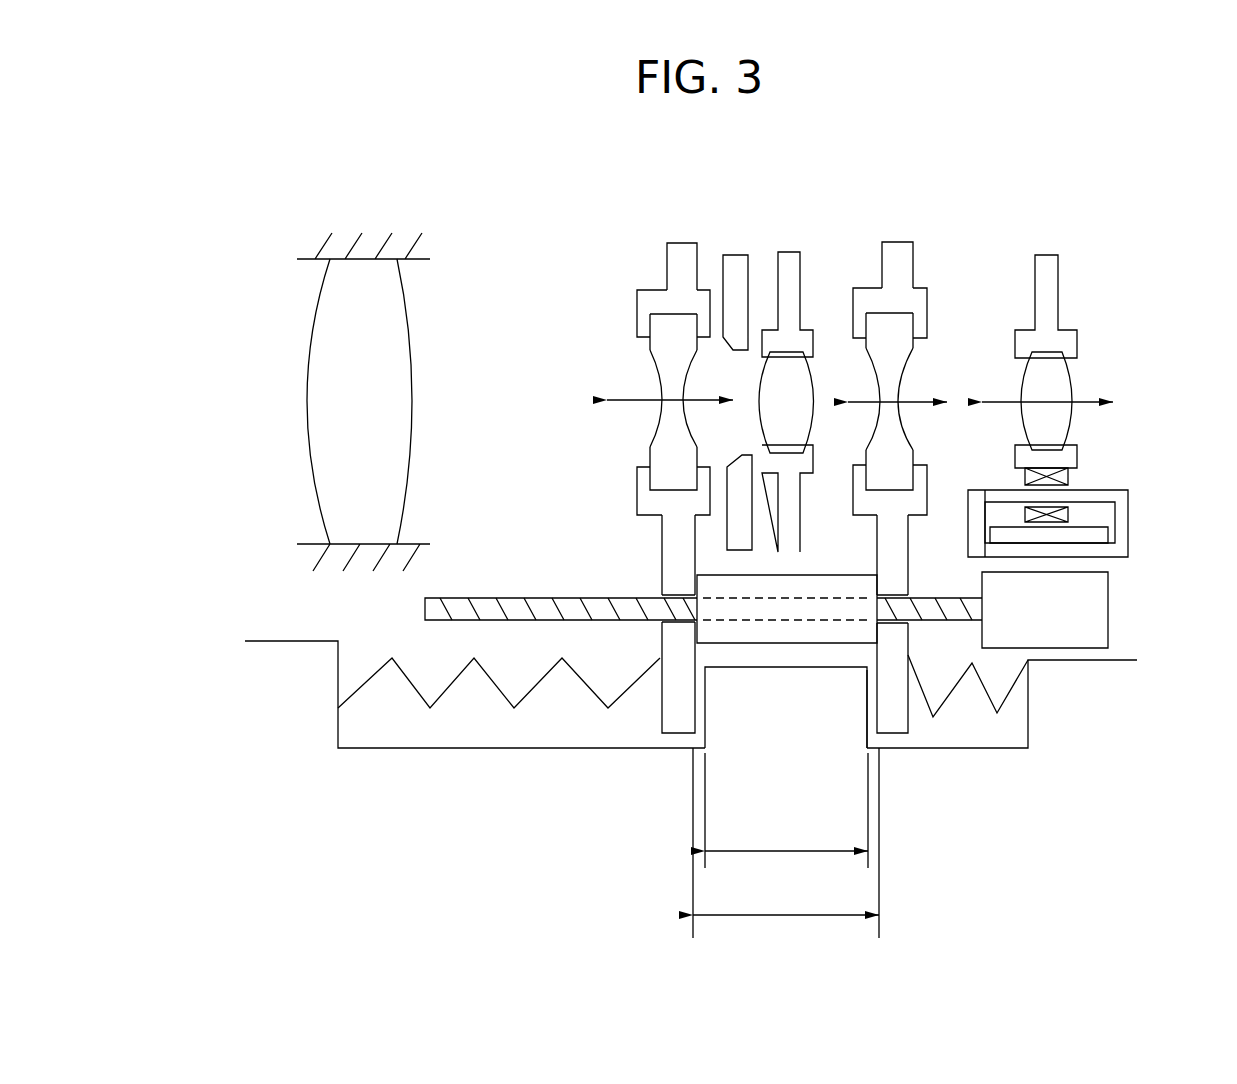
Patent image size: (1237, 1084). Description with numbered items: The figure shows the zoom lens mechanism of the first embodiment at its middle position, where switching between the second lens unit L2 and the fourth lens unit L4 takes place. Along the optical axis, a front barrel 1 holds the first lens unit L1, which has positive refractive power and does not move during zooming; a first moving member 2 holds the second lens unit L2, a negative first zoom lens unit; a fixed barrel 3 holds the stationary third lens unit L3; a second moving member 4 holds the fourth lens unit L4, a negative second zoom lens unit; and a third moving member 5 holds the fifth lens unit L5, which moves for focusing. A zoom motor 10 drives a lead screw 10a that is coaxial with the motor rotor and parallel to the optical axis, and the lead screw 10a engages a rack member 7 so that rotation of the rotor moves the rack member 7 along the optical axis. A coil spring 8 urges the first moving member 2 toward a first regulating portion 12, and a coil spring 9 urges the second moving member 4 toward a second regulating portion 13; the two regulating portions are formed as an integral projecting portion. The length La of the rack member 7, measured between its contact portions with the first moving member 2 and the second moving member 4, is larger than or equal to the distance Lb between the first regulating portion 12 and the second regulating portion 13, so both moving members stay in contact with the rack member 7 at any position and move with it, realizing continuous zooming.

The front barrel 1 is at (322, 246).
The first lens unit L1 is at (307, 410).
The first moving member 2 is at (666, 258).
The second lens unit L2 is at (660, 428).
The fixed barrel 3 is at (800, 263).
The third lens unit L3 is at (800, 392).
The second moving member 4 is at (913, 258).
The fourth lens unit L4 is at (900, 378).
The third moving member 5 is at (1058, 280).
The fifth lens unit L5 is at (1068, 380).
The rack member 7 is at (816, 576).
The coil spring 8 is at (486, 676).
The coil spring 9 is at (736, 255).
The zoom motor 10 is at (1115, 608).
The lead screw 10a is at (626, 598).
The first regulating portion 12 is at (706, 712).
The second regulating portion 13 is at (867, 697).
The length of the rack member La is at (786, 843).
The distance between the first and second regulating portions Lb is at (786, 810).